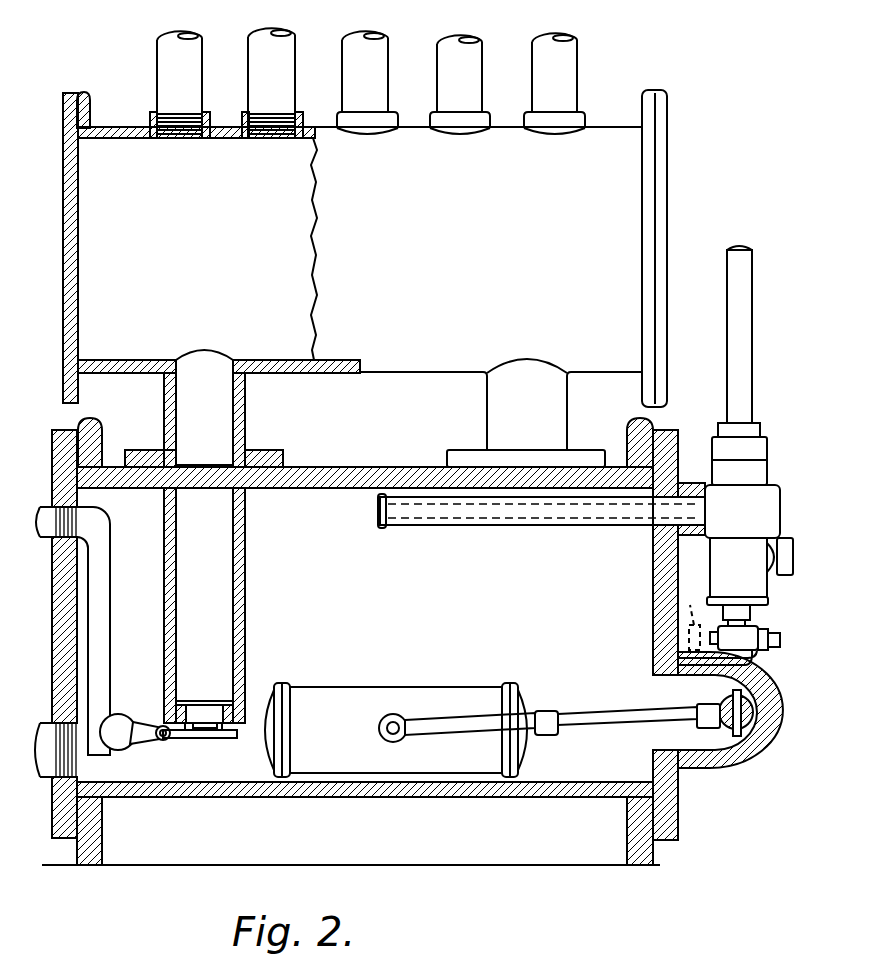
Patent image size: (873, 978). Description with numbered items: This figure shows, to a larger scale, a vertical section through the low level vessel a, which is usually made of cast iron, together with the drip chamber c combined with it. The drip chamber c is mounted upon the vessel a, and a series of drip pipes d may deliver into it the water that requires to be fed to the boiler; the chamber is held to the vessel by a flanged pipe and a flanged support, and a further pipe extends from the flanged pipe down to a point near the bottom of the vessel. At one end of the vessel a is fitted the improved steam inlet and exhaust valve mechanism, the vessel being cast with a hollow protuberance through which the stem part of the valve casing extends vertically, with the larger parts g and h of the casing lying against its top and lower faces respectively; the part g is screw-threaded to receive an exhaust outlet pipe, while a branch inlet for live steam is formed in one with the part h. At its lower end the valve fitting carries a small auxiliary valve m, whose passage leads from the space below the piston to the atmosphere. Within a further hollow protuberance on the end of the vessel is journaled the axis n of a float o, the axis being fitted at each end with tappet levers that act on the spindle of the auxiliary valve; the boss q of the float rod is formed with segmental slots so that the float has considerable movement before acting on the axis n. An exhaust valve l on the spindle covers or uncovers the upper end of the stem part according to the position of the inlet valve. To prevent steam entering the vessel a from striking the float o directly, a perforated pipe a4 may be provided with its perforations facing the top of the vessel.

The low level vessel a is at (385, 440).
The perforated pipe a4 is at (600, 530).
The drip chamber c is at (365, 277).
The drip pipes d is at (178, 78).
The valve casing g is at (724, 452).
The lower part of valve casing h is at (737, 571).
The auxiliary valve m is at (745, 636).
The axis of float n is at (706, 712).
The float o is at (396, 730).
The boss of float rod q is at (725, 742).
The exhaust valve l is at (219, 745).